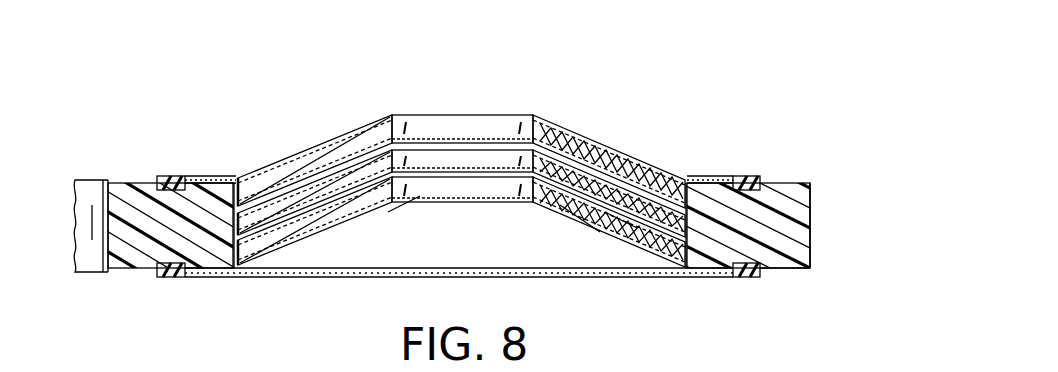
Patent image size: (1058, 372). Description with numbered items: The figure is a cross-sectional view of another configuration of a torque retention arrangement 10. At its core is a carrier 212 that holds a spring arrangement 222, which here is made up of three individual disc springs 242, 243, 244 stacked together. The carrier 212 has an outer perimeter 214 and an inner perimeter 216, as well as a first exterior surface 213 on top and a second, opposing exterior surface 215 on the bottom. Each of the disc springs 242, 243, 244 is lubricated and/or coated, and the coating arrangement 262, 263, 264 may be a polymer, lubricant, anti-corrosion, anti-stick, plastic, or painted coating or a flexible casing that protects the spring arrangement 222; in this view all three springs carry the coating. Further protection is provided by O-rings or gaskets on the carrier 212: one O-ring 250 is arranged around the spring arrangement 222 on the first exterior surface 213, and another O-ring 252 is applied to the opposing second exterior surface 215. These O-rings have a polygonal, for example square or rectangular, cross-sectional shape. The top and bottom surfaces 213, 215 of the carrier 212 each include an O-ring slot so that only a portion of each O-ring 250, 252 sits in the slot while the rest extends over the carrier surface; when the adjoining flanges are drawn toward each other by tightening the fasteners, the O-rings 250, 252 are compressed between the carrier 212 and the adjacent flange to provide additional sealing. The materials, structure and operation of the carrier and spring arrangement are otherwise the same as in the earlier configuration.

The torque retention arrangement 10 is at (688, 67).
The carrier 212 is at (768, 181).
The first exterior surface 213 is at (785, 182).
The outer perimeter 214 is at (812, 227).
The second exterior surface 215 is at (785, 270).
The inner perimeter 216 is at (107, 207).
The spring arrangement 222 is at (586, 119).
The disc spring 242 is at (337, 145).
The disc spring 243 is at (617, 193).
The disc spring 244 is at (292, 232).
The O-ring 250 is at (177, 174).
The O-ring 252 is at (170, 278).
The coating 262 is at (292, 155).
The coating 263 is at (640, 193).
The coating 264 is at (602, 237).